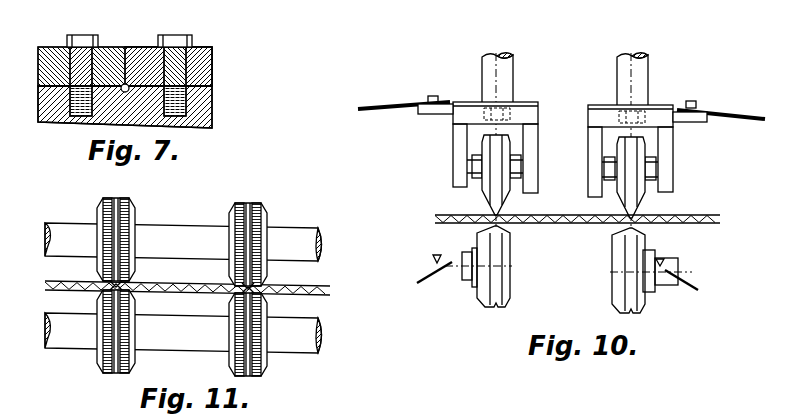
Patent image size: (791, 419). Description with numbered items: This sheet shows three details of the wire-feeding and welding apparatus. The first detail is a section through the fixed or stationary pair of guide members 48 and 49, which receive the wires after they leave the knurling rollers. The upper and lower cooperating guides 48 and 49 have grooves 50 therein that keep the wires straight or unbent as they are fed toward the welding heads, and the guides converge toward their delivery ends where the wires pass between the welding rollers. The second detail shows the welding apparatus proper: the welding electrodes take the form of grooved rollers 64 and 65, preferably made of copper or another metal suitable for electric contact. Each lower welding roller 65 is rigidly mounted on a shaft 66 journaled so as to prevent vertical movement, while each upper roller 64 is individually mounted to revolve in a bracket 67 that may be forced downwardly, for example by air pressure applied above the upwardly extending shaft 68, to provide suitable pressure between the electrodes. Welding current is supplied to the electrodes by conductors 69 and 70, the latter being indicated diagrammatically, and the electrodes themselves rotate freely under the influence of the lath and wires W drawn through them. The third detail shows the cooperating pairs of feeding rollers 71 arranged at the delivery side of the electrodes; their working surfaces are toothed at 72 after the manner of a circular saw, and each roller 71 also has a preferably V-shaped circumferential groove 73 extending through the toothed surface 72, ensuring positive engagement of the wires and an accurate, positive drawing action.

In FIG. 7, the upper guide member 48 is at (212, 67).
In FIG. 7, the lower guide member 49 is at (205, 108).
In FIG. 7, the groove 50 is at (133, 50).
In FIG. 11, the feeding roller 71 is at (135, 212).
In FIG. 11, the toothed surface 72 is at (247, 374).
In FIG. 11, the V-shaped groove 73 is at (104, 200).
In FIG. 10, the upper welding roller 64 is at (480, 198).
In FIG. 10, the lower welding roller 65 is at (483, 296).
In FIG. 10, the shaft 66 is at (433, 257).
In FIG. 10, the bracket 67 is at (452, 140).
In FIG. 10, the upwardly extending shaft 68 is at (617, 77).
In FIG. 10, the conductor 69 is at (397, 105).
In FIG. 10, the conductor 70 is at (416, 278).
In FIG. 11, the web W is at (330, 292).
In FIG. 10, the web W is at (690, 222).